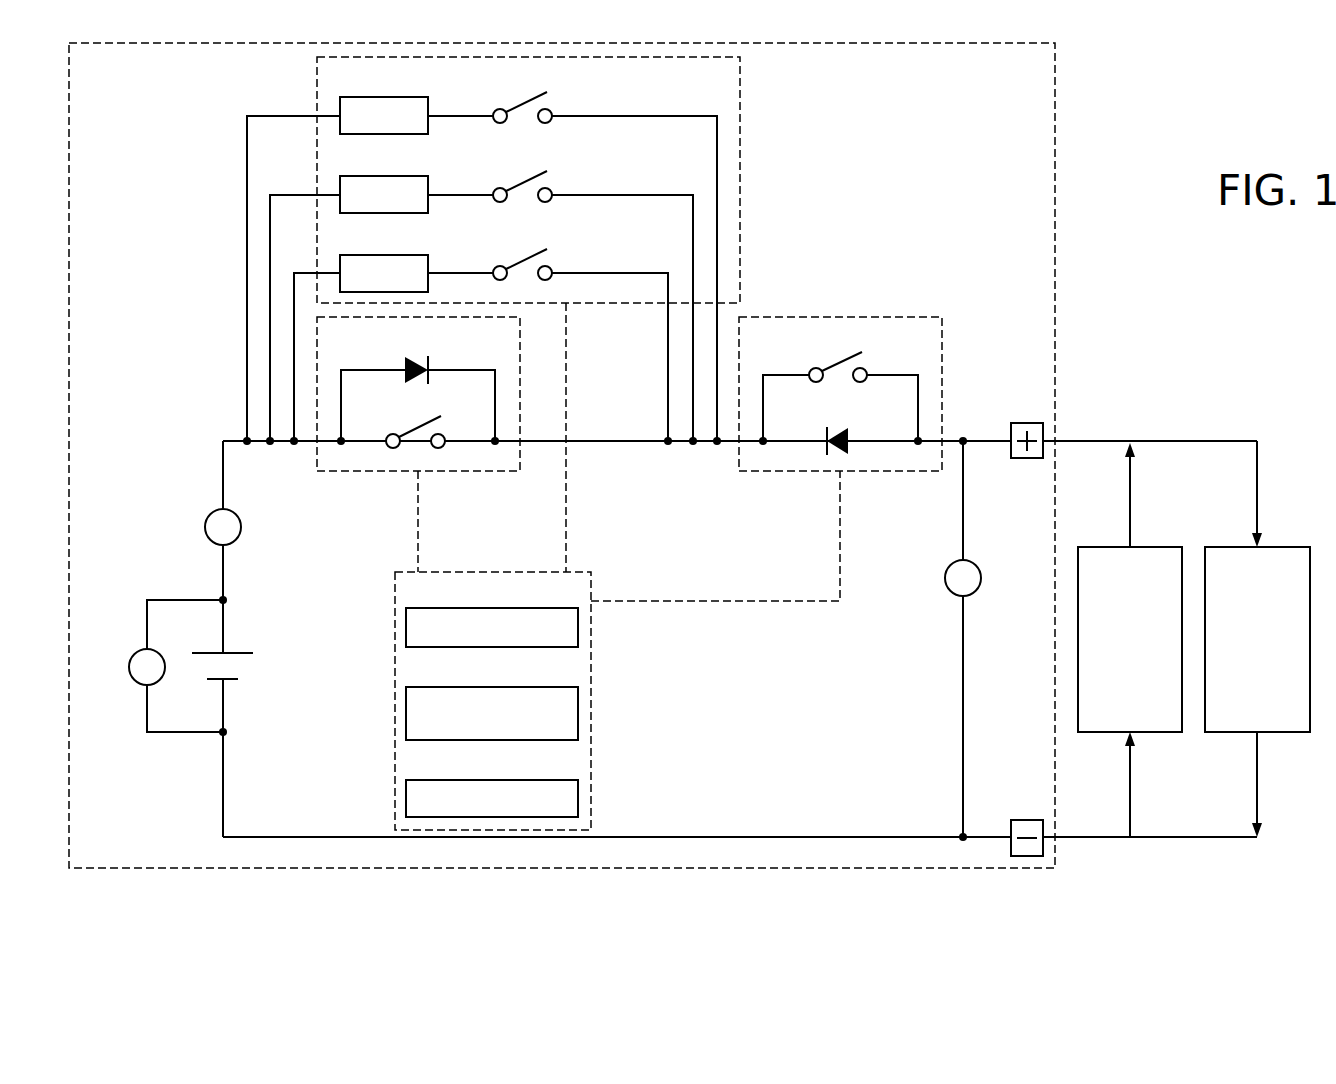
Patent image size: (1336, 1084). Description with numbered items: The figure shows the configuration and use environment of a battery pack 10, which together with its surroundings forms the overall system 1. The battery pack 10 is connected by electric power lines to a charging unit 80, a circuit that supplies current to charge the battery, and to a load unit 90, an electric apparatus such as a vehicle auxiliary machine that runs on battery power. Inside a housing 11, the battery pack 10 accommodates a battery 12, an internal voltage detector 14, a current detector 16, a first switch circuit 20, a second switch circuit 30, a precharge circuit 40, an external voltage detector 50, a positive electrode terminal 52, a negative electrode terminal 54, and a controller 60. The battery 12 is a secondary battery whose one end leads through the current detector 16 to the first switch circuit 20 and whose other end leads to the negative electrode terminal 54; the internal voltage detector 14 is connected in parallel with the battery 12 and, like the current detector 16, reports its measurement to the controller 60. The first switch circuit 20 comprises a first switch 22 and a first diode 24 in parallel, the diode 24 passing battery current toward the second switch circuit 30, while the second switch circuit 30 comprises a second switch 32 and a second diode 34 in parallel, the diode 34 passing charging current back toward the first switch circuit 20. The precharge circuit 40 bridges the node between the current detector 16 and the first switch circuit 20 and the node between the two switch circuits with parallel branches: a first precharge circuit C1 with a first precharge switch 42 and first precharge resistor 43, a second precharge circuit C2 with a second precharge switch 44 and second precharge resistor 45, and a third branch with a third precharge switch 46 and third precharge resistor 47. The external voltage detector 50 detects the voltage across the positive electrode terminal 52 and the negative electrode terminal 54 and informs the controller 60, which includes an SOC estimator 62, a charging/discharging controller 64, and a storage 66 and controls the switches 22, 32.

The power supply system 1 is at (1184, 84).
The battery pack 10 is at (138, 890).
The housing 11 is at (563, 872).
The battery 12 is at (250, 640).
The internal voltage detector 14 is at (128, 667).
The current detector 16 is at (204, 527).
The first switch circuit 20 is at (359, 473).
The first switch 22 is at (415, 417).
The first diode 24 is at (442, 351).
The second switch circuit 30 is at (840, 316).
The second switch 32 is at (835, 351).
The second diode 34 is at (845, 416).
The precharge circuit 40 is at (742, 180).
The first precharge switch 42 is at (519, 249).
The first precharge resistor 43 is at (377, 255).
The second precharge switch 44 is at (519, 170).
The second precharge resistor 45 is at (377, 176).
The third precharge switch 46 is at (519, 91).
The third precharge resistor 47 is at (377, 97).
The external voltage detector 50 is at (944, 578).
The positive electrode terminal 52 is at (1027, 423).
The negative electrode terminal 54 is at (1027, 820).
The controller 60 is at (492, 567).
The SOC estimator 62 is at (527, 608).
The charging/discharging controller 64 is at (527, 687).
The storage 66 is at (527, 780).
The charging unit 80 is at (1148, 547).
The load unit 90 is at (1275, 547).
The first precharge circuit C1 is at (613, 263).
The second precharge circuit C2 is at (613, 104).